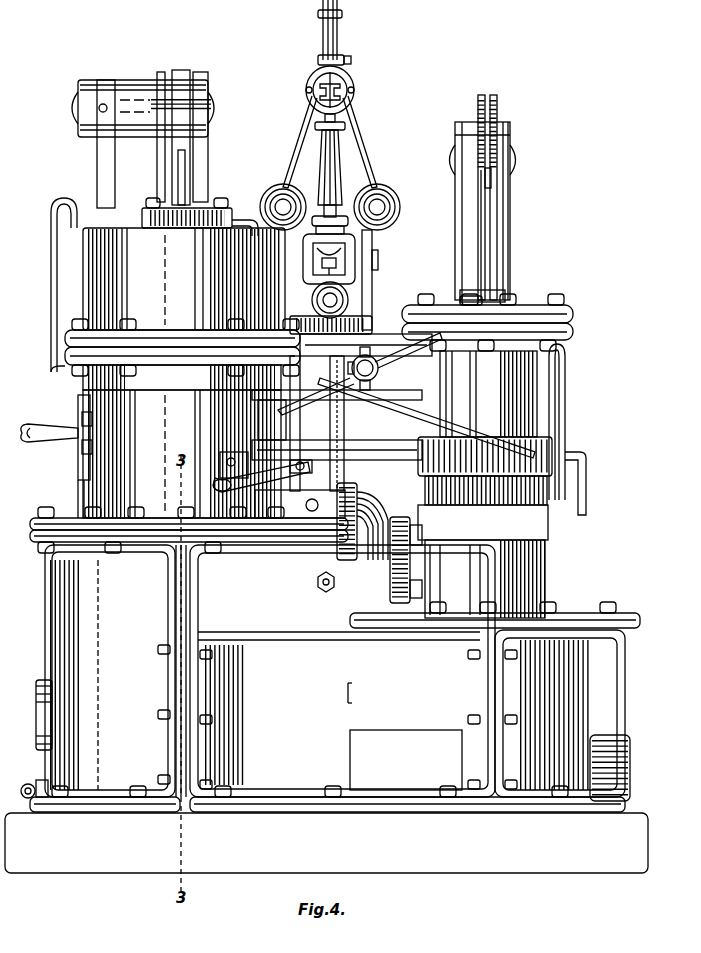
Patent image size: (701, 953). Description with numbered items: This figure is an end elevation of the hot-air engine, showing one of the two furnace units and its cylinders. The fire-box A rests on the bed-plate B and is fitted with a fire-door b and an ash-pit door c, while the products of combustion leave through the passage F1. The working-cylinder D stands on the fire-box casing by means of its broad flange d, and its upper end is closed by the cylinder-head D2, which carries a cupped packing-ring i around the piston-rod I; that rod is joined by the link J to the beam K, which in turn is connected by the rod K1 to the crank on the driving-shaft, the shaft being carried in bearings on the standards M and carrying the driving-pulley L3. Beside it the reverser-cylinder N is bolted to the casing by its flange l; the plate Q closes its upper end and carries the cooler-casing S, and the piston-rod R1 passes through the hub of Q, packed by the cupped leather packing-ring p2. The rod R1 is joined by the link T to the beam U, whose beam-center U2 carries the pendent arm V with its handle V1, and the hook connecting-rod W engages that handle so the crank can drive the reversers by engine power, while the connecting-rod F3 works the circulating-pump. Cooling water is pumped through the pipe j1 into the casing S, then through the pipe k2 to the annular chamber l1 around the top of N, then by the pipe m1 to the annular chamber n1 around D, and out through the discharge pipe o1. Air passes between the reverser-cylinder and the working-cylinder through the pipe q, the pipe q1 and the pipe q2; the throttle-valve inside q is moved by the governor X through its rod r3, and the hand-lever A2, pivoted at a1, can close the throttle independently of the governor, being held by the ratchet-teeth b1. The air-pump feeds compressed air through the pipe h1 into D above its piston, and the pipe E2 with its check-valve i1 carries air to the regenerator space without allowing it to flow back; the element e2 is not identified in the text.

The fire-box A is at (335, 671).
The bed-plate B is at (326, 843).
The working-cylinder D is at (483, 484).
The cylinder-head D2 is at (455, 325).
The cooler-casing S is at (184, 279).
The reverser-cylinder N is at (182, 454).
The cylinder-head plate Q is at (175, 352).
The flange l is at (189, 530).
The annular chamber l1 is at (185, 377).
The cupped leather packing-ring p2 is at (146, 222).
The water pipe j1 is at (245, 213).
The water pipe k2 is at (56, 285).
The beam-center U2 is at (78, 108).
The beam U is at (176, 76).
The pendent arm V is at (106, 144).
The link T is at (193, 130).
The piston-rod R1 is at (192, 170).
The handle V1 is at (46, 424).
The hook connecting-rod W is at (78, 408).
The connecting-rod F3 is at (78, 490).
The governor X is at (330, 167).
The check-valve i1 is at (378, 372).
The pipe E2 is at (430, 345).
The standard M is at (342, 397).
The driving-pulley L3 is at (317, 423).
The governor rod r3 is at (330, 441).
The water pipe m1 is at (406, 418).
The ratchet-teeth b1 is at (220, 466).
The hand-lever A2 is at (261, 478).
The pivot a1 is at (302, 472).
The pipe q is at (300, 504).
The pipe q1 is at (373, 543).
The pipe q2 is at (414, 528).
The cupped packing-ring i is at (500, 306).
The annular chamber n1 is at (485, 456).
The air pipe h1 is at (565, 413).
The discharge pipe o1 is at (572, 496).
The beam K is at (483, 194).
The link J is at (490, 152).
The piston-rod I is at (478, 237).
The rod K1 is at (510, 237).
The flange d is at (495, 617).
The bracket e2 is at (341, 688).
The fire-door b is at (37, 715).
The ash-pit door c is at (34, 781).
The passage F1 is at (620, 768).